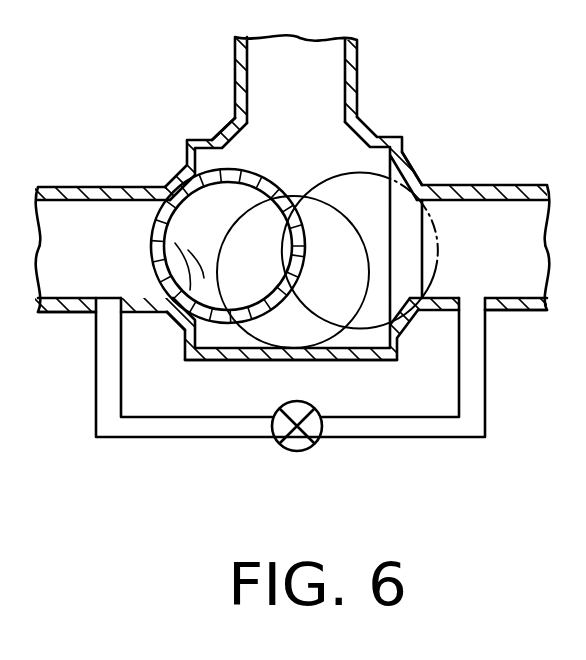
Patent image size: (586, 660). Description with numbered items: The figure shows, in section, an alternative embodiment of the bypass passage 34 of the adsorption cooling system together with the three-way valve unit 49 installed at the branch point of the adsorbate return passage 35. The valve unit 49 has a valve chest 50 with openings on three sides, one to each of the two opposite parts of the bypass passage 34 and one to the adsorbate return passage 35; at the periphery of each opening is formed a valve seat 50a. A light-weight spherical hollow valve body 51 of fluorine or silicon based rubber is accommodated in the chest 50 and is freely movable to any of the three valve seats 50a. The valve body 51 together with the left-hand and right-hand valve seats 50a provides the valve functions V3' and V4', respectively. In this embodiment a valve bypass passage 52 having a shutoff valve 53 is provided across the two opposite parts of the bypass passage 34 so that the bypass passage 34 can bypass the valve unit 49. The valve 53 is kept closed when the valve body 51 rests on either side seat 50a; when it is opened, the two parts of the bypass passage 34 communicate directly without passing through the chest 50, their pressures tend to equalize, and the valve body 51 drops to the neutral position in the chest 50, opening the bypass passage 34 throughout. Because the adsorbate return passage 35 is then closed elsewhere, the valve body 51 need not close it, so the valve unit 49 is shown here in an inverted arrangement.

The bypass passage 34 is at (78, 220).
The adsorbate return passage 35 is at (322, 72).
The three-way valve unit 49 is at (363, 362).
The valve chest 50 is at (217, 158).
The valve seat 50a is at (250, 137).
The valve body 51 is at (152, 230).
The valve bypass passage 52 is at (150, 438).
The shutoff valve 53 is at (310, 450).
The valve function V3' is at (64, 336).
The valve function V4' is at (518, 336).